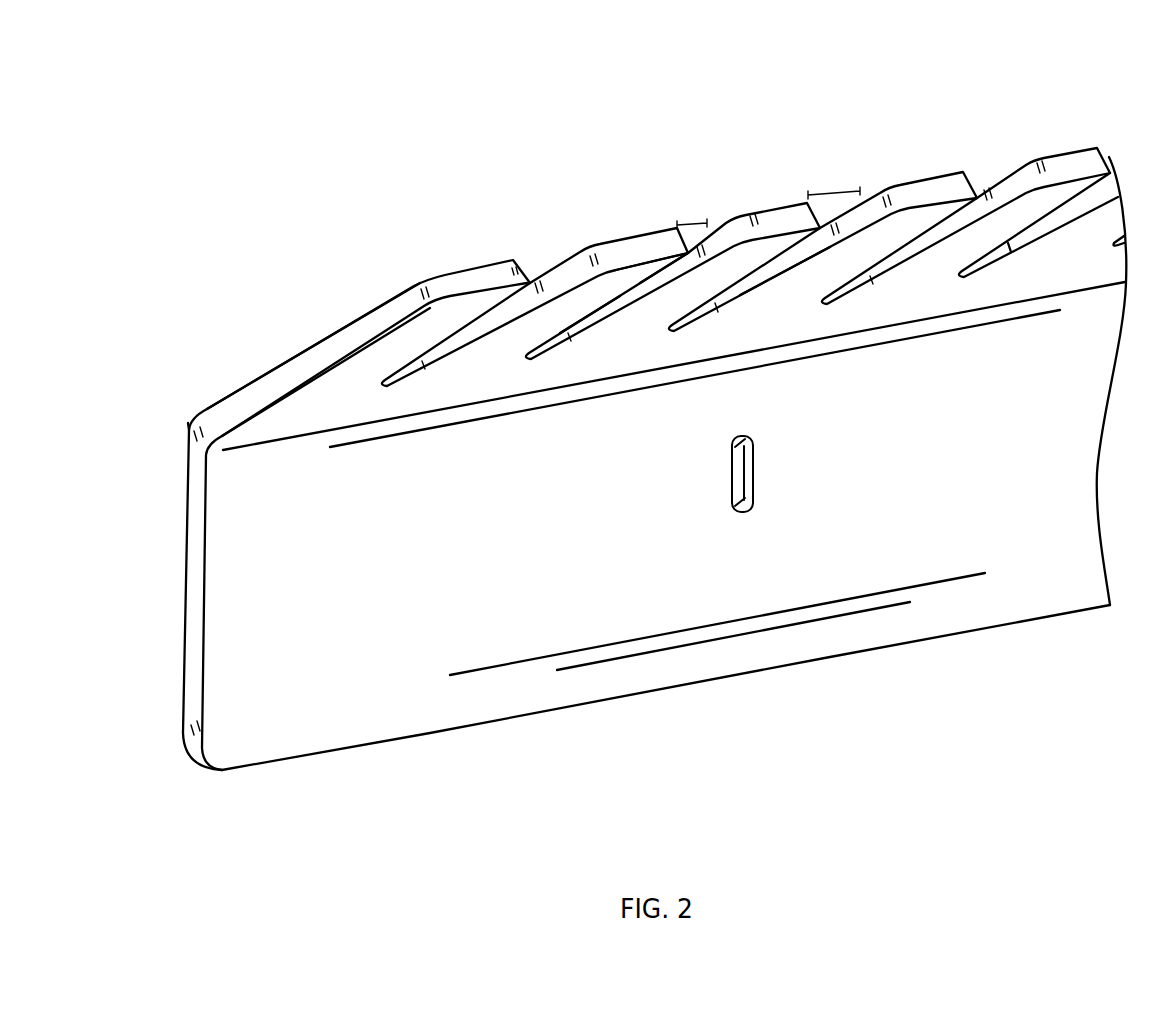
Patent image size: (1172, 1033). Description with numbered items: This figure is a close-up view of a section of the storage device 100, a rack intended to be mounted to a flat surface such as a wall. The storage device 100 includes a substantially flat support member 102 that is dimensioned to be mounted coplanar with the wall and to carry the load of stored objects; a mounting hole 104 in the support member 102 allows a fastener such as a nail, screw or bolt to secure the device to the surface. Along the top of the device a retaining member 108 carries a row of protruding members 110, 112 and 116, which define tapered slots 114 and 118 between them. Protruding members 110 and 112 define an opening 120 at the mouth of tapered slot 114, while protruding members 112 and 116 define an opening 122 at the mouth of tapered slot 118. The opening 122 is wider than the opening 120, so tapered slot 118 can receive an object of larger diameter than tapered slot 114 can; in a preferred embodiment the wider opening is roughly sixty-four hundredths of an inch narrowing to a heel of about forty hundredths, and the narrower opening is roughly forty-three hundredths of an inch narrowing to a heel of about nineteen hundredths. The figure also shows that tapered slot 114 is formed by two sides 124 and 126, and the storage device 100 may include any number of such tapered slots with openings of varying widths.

The storage device 100 is at (653, 90).
The support member 102 is at (432, 710).
The mounting hole 104 is at (742, 537).
The retaining member 108 is at (272, 363).
The protruding member 110 is at (600, 238).
The protruding member 112 is at (752, 213).
The tapered slot 114 is at (658, 282).
The protruding member 116 is at (922, 175).
The tapered slot 118 is at (785, 272).
The opening 120 is at (688, 212).
The opening 122 is at (835, 192).
The side 124 is at (594, 312).
The side 126 is at (687, 268).